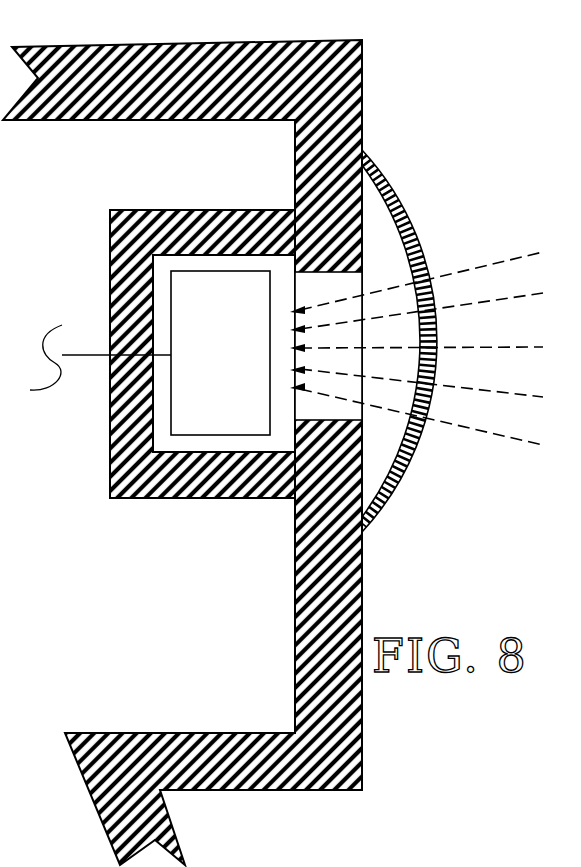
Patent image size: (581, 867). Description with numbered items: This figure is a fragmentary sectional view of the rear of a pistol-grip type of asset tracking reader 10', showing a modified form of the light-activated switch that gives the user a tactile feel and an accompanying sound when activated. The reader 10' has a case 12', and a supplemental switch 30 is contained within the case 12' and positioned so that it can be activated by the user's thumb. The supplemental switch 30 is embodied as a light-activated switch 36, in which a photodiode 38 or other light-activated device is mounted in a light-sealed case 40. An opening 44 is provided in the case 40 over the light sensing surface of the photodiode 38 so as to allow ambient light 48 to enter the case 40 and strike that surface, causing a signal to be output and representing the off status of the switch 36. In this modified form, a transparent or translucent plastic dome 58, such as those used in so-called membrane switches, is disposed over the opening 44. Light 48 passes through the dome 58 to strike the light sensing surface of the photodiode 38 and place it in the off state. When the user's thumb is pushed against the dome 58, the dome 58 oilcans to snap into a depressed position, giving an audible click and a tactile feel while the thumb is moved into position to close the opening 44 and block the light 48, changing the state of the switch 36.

The reader 10' is at (273, 452).
The case 12' is at (182, 452).
The supplemental switch 30 is at (157, 381).
The light-activated switch 36 is at (100, 433).
The photodiode 38 is at (200, 383).
The light-sealed case 40 is at (110, 278).
The opening 44 is at (330, 317).
The ambient light 48 is at (463, 427).
The dome 58 is at (425, 226).